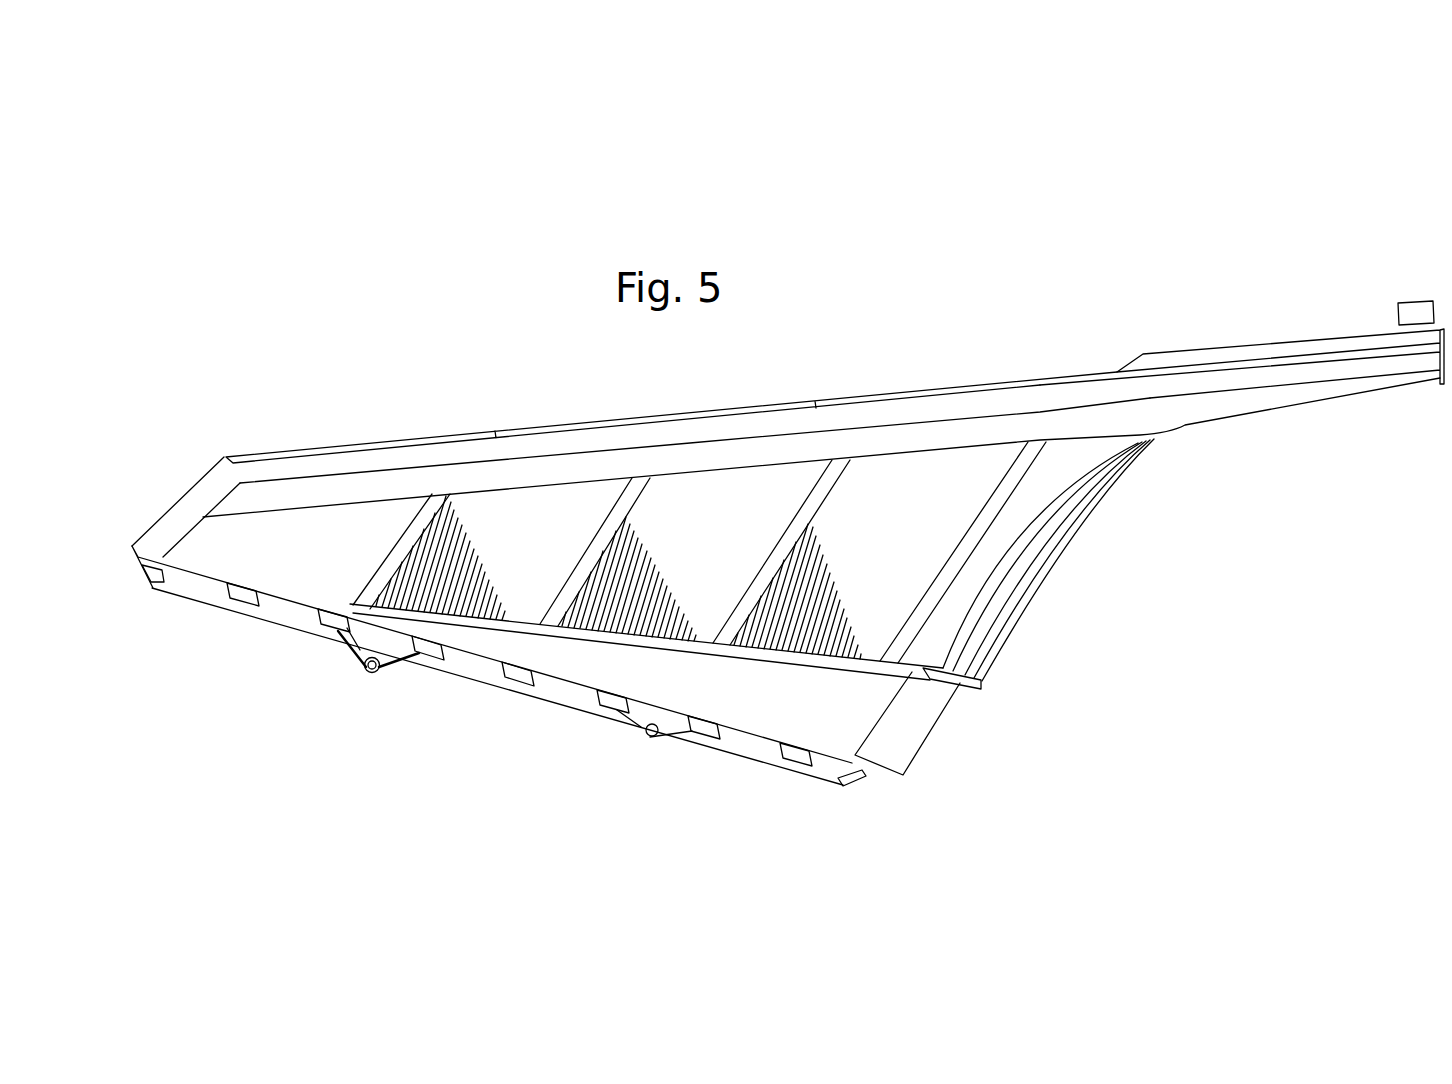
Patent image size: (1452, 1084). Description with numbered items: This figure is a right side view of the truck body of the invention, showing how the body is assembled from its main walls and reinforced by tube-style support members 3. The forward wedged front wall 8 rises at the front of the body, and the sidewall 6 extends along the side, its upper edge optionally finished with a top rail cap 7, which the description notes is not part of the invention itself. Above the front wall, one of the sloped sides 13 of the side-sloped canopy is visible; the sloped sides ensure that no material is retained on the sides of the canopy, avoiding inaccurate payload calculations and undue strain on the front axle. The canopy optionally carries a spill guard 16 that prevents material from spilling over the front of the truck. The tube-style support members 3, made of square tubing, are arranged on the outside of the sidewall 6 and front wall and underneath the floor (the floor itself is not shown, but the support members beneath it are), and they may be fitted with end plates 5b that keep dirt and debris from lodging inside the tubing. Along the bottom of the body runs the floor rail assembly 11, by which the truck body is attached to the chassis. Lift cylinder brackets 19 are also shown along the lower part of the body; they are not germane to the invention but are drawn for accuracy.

The tube-style support members 3 is at (412, 522).
The end plates 5b is at (517, 675).
The sidewall 6 is at (728, 492).
The top rail cap 7 is at (336, 444).
The forward wedged front wall 8 is at (1067, 548).
The floor rail assembly 11 is at (862, 778).
The sloped sides 13 is at (1284, 352).
The spill guard 16 is at (1412, 302).
The lift cylinder brackets 19 is at (653, 737).